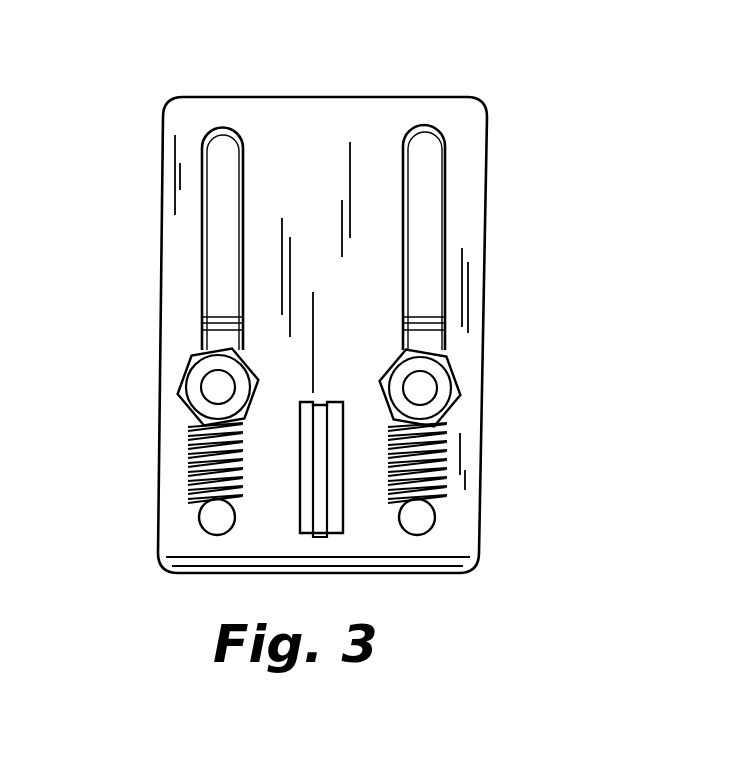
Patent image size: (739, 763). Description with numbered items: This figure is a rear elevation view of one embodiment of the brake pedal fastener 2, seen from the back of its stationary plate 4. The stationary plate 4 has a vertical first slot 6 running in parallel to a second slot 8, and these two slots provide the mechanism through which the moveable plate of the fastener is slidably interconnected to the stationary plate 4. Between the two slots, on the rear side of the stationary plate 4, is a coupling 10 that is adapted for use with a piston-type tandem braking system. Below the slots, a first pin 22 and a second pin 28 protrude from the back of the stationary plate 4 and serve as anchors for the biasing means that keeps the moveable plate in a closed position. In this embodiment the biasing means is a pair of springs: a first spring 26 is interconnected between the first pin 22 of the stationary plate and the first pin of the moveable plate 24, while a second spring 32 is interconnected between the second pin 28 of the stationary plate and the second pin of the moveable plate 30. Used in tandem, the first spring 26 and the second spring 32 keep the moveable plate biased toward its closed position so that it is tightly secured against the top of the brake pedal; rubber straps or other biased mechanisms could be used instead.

The brake pedal fastener 2 is at (503, 137).
The stationary plate 4 is at (372, 97).
The first slot 6 is at (224, 127).
The second slot 8 is at (445, 203).
The coupling 10 is at (343, 513).
The first pin 22 is at (200, 523).
The first pin of the moveable plate 24 is at (200, 382).
The first spring 26 is at (187, 462).
The second pin 28 is at (435, 522).
The second pin of the moveable plate 30 is at (438, 385).
The second spring 32 is at (447, 443).